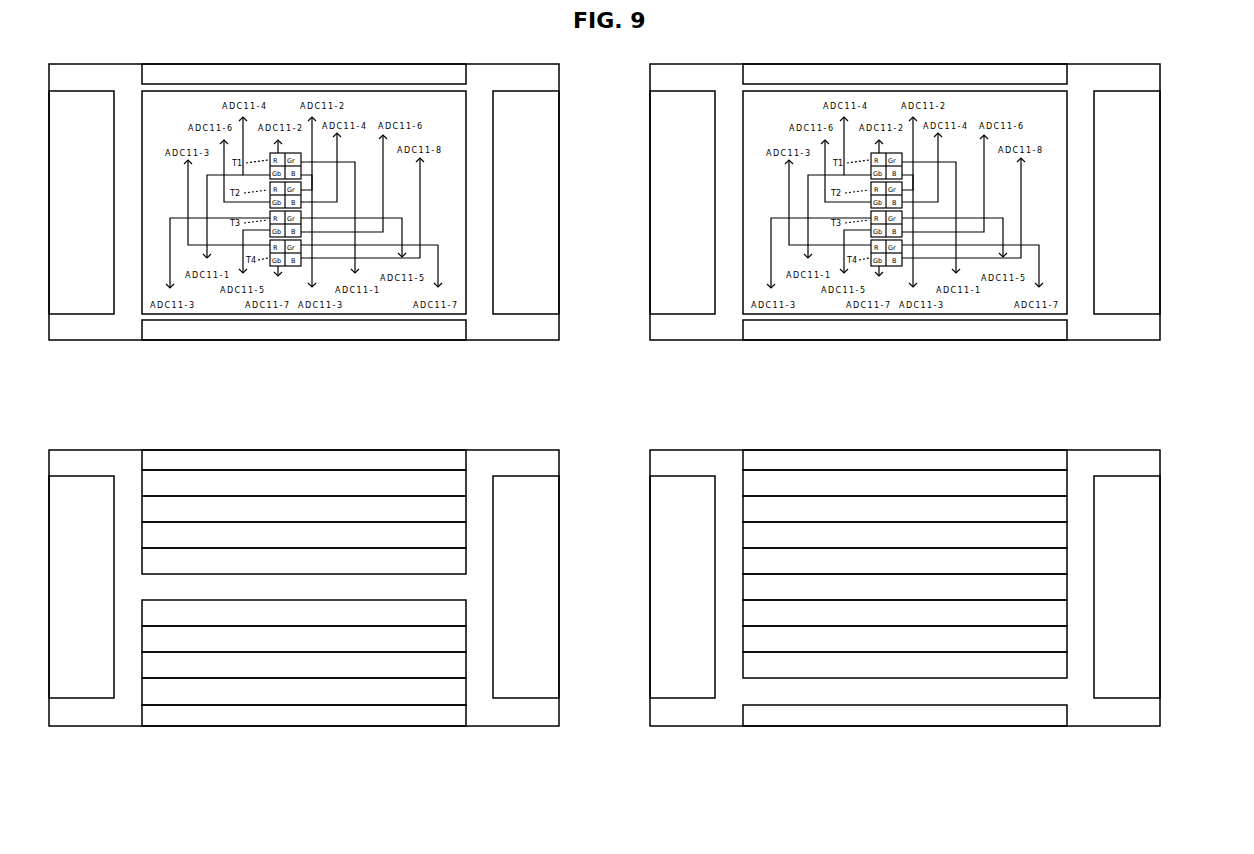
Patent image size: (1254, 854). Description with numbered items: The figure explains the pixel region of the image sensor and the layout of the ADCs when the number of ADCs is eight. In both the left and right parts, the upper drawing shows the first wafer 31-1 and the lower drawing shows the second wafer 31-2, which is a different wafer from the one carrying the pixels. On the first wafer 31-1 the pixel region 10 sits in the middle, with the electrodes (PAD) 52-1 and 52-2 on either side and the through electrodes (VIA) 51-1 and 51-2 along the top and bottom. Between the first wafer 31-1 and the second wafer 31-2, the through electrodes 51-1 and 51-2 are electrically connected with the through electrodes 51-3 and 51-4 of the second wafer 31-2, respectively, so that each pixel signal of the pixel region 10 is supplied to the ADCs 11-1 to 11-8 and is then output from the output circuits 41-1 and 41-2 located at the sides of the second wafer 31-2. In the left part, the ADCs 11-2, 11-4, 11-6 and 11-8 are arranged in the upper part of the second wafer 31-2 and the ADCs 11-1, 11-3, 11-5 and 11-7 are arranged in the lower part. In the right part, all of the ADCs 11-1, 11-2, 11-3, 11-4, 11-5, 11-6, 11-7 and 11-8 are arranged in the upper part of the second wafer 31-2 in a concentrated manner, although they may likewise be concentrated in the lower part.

The pixel region 10 is at (465, 302).
The ADC 11-1 is at (352, 695).
The ADC 11-2 is at (356, 485).
The ADC 11-3 is at (415, 668).
The ADC 11-4 is at (420, 500).
The ADC 11-5 is at (454, 641).
The ADC 11-6 is at (455, 531).
The ADC 11-7 is at (454, 613).
The ADC 11-8 is at (455, 558).
The first wafer 31-1 is at (88, 342).
The second wafer 31-2 is at (88, 728).
The output circuit 41-1 is at (88, 475).
The output circuit 41-2 is at (530, 475).
The through electrode 51-1 is at (257, 79).
The through electrode 51-2 is at (252, 342).
The through electrode 51-3 is at (264, 465).
The through electrode 51-4 is at (252, 728).
The electrode 52-1 is at (90, 90).
The electrode 52-2 is at (527, 90).